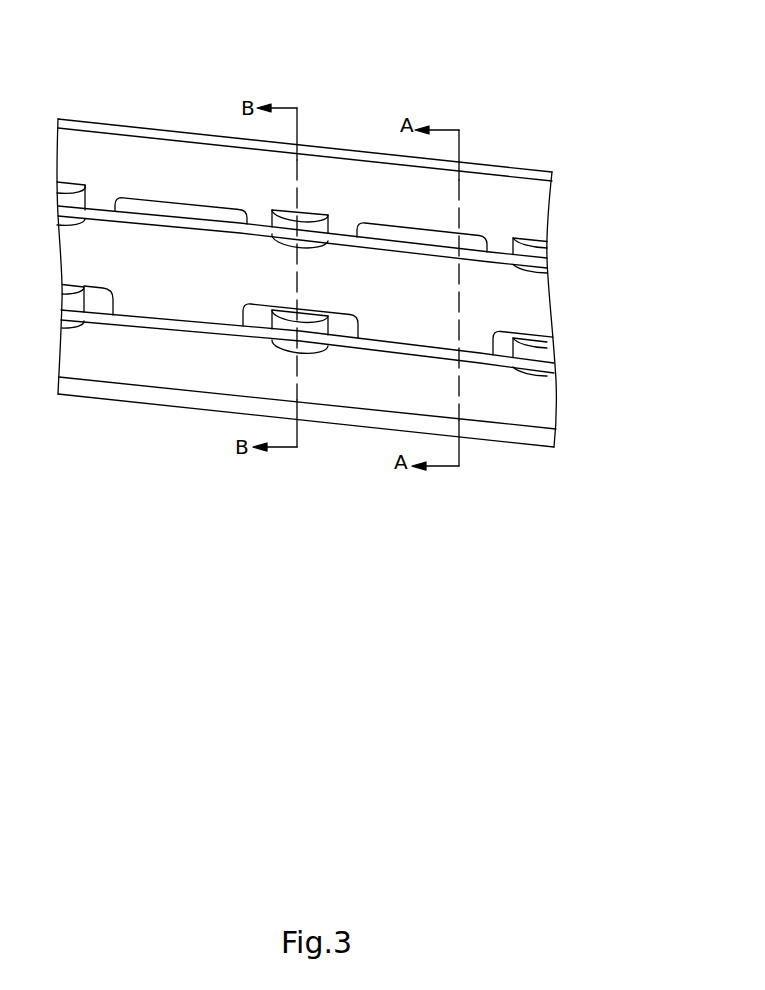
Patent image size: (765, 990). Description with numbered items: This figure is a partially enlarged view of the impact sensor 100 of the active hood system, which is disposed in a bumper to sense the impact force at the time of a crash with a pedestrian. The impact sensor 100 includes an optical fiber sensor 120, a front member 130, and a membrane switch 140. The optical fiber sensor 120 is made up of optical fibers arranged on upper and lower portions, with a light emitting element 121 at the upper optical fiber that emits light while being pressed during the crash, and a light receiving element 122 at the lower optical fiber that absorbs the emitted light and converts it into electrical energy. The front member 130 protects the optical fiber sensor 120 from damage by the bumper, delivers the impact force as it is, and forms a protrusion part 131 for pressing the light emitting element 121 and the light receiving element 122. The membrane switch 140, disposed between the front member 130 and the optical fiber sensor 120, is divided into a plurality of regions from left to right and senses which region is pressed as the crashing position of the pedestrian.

The impact sensor 100 is at (381, 235).
The optical fiber sensor 120 is at (354, 198).
The light emitting element 121 is at (345, 241).
The light receiving element 122 is at (392, 343).
The front member 130 is at (530, 202).
The protrusion part 131 is at (528, 253).
The membrane switch 140 is at (354, 371).